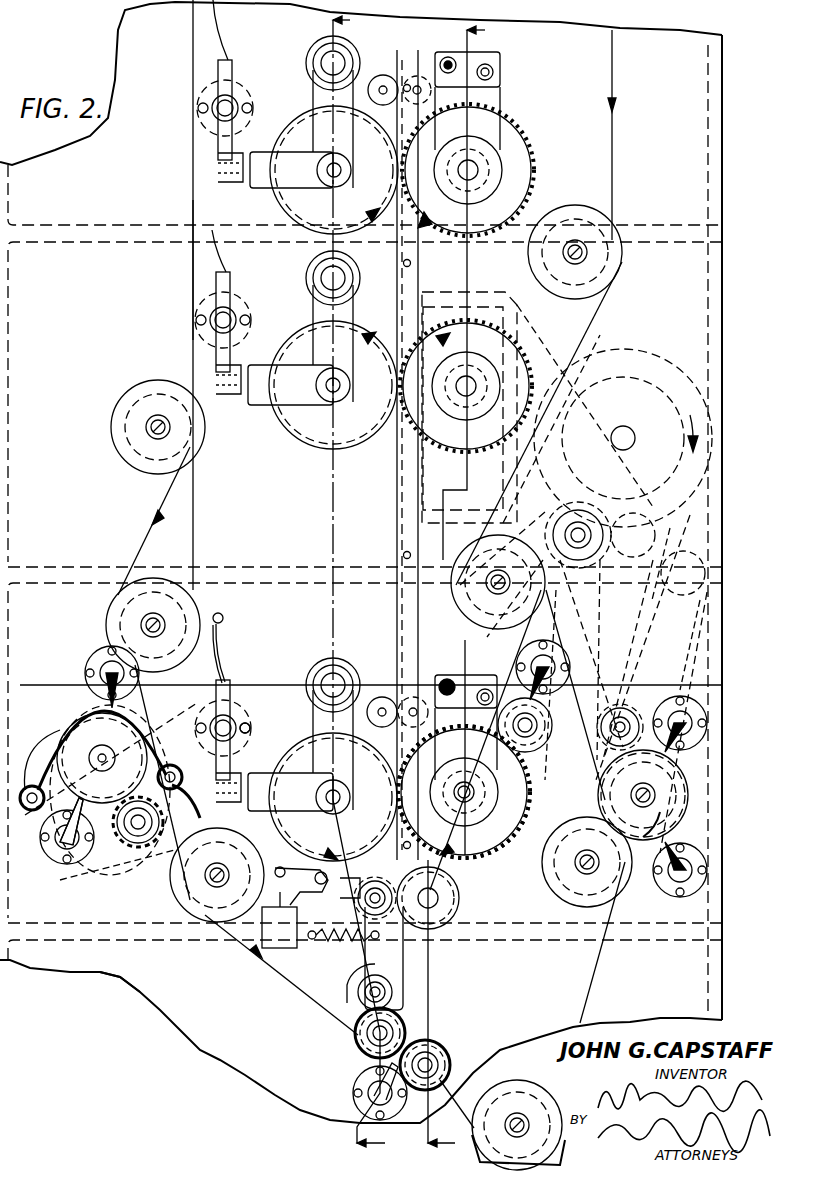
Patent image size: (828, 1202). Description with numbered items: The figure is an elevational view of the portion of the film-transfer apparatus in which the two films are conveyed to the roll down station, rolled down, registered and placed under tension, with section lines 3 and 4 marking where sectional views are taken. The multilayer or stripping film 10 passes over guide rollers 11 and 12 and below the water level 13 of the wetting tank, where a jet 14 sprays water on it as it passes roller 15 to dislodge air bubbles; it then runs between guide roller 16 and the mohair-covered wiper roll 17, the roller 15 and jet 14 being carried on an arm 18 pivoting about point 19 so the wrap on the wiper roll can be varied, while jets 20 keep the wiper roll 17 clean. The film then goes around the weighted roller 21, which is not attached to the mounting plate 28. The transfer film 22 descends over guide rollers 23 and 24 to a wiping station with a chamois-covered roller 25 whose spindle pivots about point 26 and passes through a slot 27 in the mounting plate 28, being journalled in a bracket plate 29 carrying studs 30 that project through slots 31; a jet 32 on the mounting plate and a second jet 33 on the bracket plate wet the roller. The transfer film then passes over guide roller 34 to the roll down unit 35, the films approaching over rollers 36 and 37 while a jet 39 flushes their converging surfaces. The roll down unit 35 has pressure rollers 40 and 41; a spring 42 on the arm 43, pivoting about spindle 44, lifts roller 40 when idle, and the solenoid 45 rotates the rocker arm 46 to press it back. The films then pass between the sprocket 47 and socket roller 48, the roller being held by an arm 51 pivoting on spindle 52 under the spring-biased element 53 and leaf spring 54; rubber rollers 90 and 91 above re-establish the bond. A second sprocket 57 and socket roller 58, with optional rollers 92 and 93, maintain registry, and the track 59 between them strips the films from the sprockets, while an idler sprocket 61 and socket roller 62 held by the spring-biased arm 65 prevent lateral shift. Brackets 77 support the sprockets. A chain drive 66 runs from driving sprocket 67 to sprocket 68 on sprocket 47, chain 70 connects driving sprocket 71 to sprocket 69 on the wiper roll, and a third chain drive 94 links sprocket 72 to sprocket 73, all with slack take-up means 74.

The section line 3- 3 is at (362, 586).
The section line 4- 4 is at (484, 591).
The multilayer or stripping film 10 is at (612, 74).
The guide roller 11 is at (575, 206).
The guide roller 12 is at (480, 560).
The water level 13 is at (33, 685).
The jet 14 is at (515, 664).
The roller 15 is at (550, 718).
The guide roller 16 is at (620, 893).
The wiper roll 17 is at (688, 800).
The arm 18 is at (548, 552).
The pivot point 19 is at (592, 522).
The jets 20 is at (705, 728).
The roller 21 is at (530, 1088).
The transfer film or support 22 is at (193, 268).
The guide roller 23 is at (118, 440).
The guide roller 24 is at (113, 603).
The chamois-covered roller 25 is at (80, 718).
The pivot point 26 is at (134, 838).
The slot 27 is at (170, 716).
The mounting plate 28 is at (145, 988).
The bracket plate 29 is at (30, 745).
The studs 30 is at (32, 812).
The slots 31 is at (58, 738).
The jet 32 is at (100, 660).
The second jet 33 is at (58, 862).
The guide roller 34 is at (188, 885).
The roll down unit 35 is at (458, 908).
The roller 36 is at (357, 1045).
The roller 37 is at (440, 1048).
The jet 39 is at (358, 1090).
The pressure roller 40 is at (368, 882).
The pressure roller 41 is at (440, 896).
The spring 42 is at (345, 940).
The arm 43 is at (400, 948).
The spindle 44 is at (358, 992).
The solenoid 45 is at (280, 948).
The rocker arm 46 is at (292, 868).
The sprocket 47 is at (505, 848).
The socket roller 48 is at (292, 740).
The arm 51 is at (318, 684).
The spindle 52 is at (345, 668).
The spring-biased pivoted element 53 is at (228, 690).
The leaf spring 54 is at (222, 642).
The second sprocket 57 is at (525, 160).
The socket roller 58 is at (290, 205).
The track 59 is at (397, 495).
The idler sprocket 61 is at (520, 372).
The socket roller 62 is at (298, 428).
The spring-biased arm 65 is at (226, 398).
The chain drive 66 is at (636, 598).
The driving sprocket 67 is at (633, 378).
The sprocket 68 is at (497, 862).
The sprocket 69 is at (662, 788).
The chain 70 is at (700, 648).
The driving sprocket 71 is at (690, 398).
The second sprocket 72 is at (668, 820).
The sprocket 73 is at (140, 856).
The slack take-up means 74 is at (668, 556).
The sprocket supporting brackets 77 is at (490, 93).
The rubber coated roller 90 is at (447, 679).
The rubber coated roller 91 is at (382, 696).
The rubber coated roller 92 is at (417, 76).
The rubber coated roller 93 is at (381, 78).
The third chain drive 94 is at (545, 772).